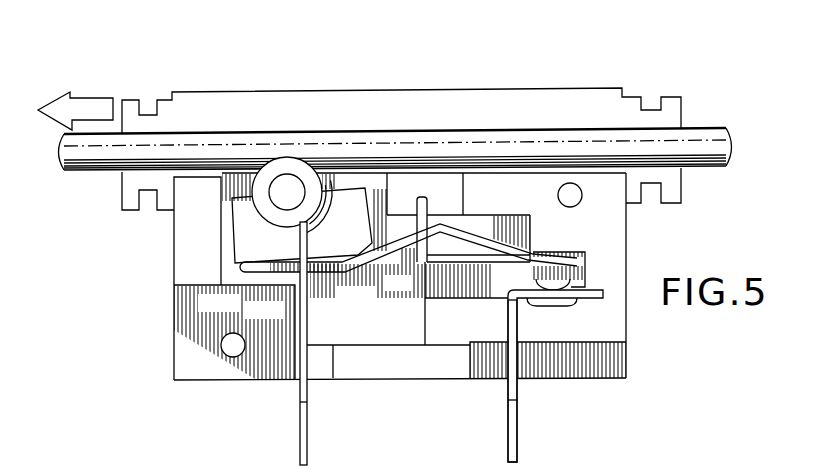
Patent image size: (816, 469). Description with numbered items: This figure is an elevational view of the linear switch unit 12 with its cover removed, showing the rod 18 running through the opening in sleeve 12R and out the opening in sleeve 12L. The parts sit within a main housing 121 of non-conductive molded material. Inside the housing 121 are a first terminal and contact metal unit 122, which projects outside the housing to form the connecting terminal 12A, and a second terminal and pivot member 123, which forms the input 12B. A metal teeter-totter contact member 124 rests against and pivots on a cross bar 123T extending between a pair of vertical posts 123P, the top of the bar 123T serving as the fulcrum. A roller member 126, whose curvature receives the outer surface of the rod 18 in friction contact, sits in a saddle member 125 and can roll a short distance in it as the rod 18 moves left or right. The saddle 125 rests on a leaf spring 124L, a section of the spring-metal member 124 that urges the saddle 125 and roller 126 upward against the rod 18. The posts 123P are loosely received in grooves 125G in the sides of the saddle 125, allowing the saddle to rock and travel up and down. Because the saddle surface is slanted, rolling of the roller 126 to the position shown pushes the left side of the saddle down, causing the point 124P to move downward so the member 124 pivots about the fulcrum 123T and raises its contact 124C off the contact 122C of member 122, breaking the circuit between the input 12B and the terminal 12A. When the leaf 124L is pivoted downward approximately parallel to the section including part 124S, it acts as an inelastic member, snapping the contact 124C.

The switch unit 12 is at (545, 84).
The sleeve 12L is at (165, 107).
The sleeve 12R is at (669, 106).
The connecting terminal 12A is at (517, 420).
The input 12B is at (307, 413).
The rod 18 is at (705, 142).
The main housing 121 is at (612, 271).
The first terminal and contact metal unit 122 is at (508, 331).
The contact 122C is at (533, 283).
The second terminal and pivot member 123 is at (388, 336).
The vertical posts 123P is at (307, 236).
The cross bar 123T is at (288, 277).
The teeter-totter contact member 124 is at (380, 258).
The contact 124C is at (575, 262).
The leaf spring 124L is at (401, 277).
The point 124P is at (238, 266).
The part 124S is at (262, 277).
The saddle member 125 is at (352, 198).
The grooves 125G is at (297, 236).
The roller member 126 is at (289, 162).